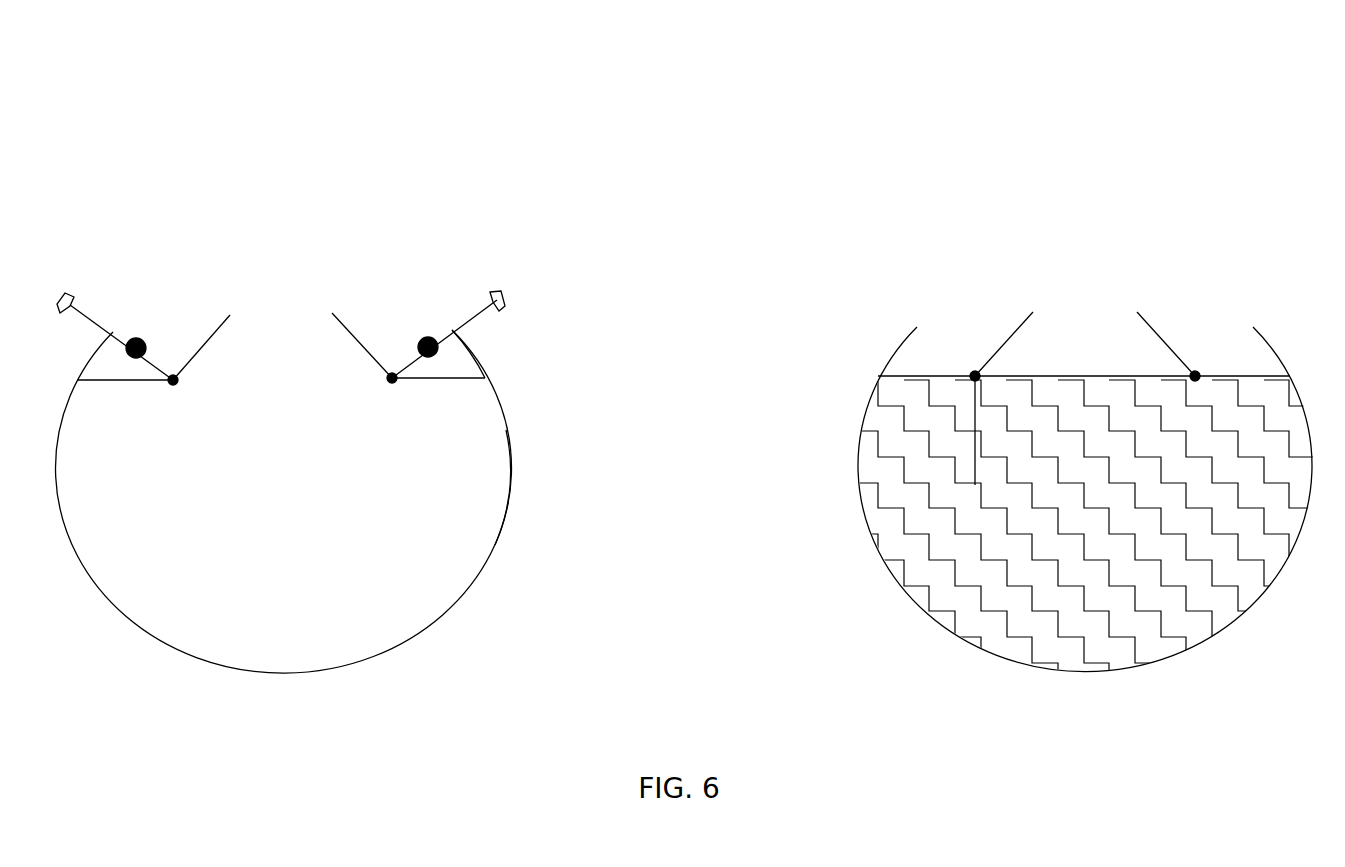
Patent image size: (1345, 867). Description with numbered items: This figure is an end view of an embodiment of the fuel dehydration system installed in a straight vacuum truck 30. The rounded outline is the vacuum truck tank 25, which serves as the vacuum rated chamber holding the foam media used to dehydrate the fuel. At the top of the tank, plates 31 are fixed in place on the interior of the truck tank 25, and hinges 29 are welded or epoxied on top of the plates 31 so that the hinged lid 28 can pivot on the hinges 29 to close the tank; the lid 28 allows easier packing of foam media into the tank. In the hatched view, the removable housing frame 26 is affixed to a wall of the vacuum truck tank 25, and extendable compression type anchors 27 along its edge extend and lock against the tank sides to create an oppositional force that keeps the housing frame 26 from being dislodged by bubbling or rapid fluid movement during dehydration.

The vacuum truck tank 25 is at (467, 528).
The housing frame 26 is at (975, 376).
The anchor 27 is at (452, 330).
The hinged lid 28 is at (367, 347).
The hinge 29 is at (392, 377).
The vacuum truck 30 is at (510, 507).
The plate 31 is at (485, 378).